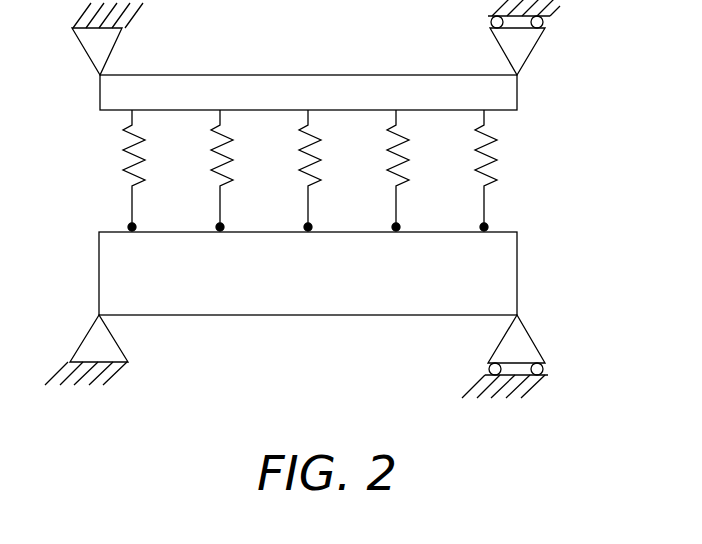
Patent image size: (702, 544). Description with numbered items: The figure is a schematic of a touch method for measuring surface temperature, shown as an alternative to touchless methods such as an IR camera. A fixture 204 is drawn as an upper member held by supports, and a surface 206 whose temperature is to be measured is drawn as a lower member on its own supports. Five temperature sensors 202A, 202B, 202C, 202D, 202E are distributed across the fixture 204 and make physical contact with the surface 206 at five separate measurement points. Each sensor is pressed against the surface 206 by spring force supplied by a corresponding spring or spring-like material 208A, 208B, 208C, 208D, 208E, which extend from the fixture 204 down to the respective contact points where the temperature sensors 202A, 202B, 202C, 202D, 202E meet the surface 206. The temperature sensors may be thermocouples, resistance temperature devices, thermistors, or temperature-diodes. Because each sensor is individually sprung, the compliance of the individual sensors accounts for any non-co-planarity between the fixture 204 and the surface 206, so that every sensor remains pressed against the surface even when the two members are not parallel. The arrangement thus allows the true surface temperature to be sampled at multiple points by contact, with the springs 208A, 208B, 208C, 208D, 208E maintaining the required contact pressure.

The fixture 204 is at (518, 98).
The surface 206 is at (496, 232).
The spring 208A is at (122, 146).
The spring 208B is at (203, 128).
The spring 208C is at (297, 130).
The spring 208D is at (387, 132).
The spring 208E is at (472, 130).
The temperature sensor 202A is at (131, 225).
The temperature sensor 202B is at (220, 235).
The temperature sensor 202C is at (307, 235).
The temperature sensor 202D is at (397, 235).
The temperature sensor 202E is at (484, 235).